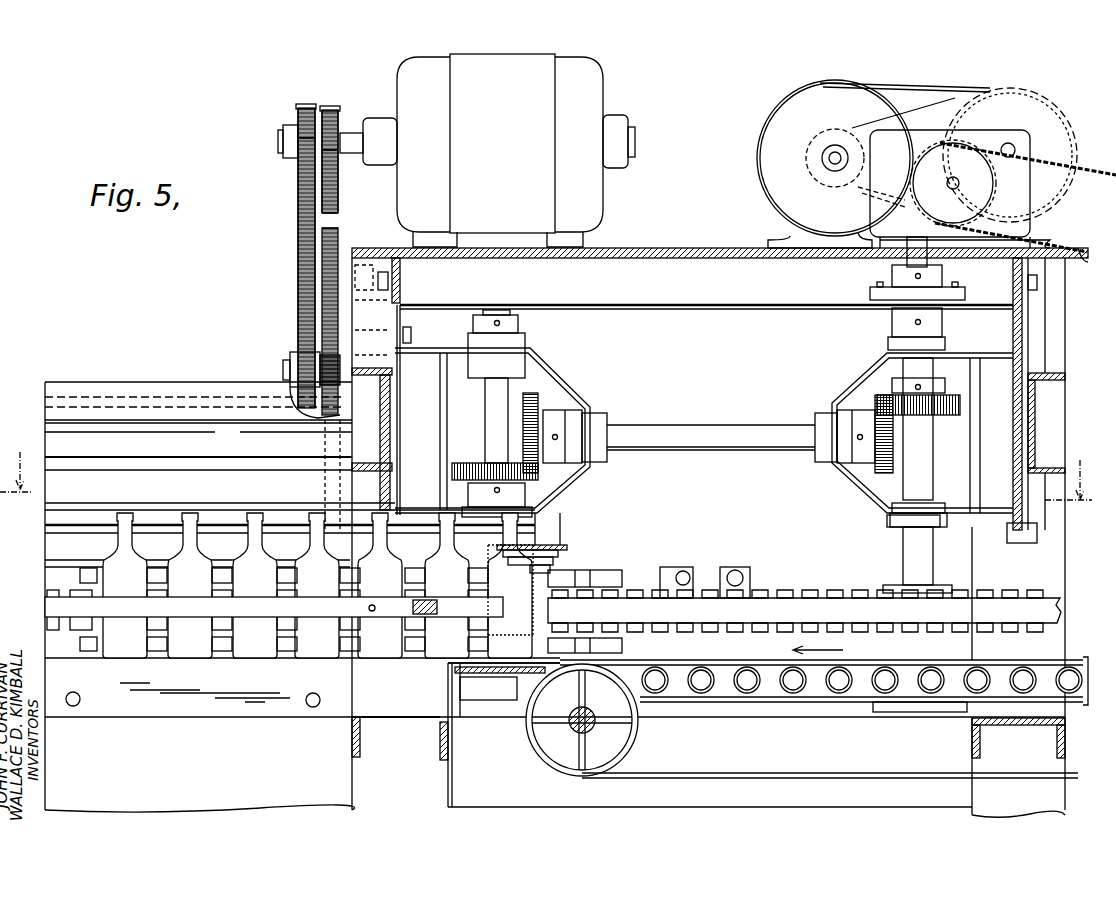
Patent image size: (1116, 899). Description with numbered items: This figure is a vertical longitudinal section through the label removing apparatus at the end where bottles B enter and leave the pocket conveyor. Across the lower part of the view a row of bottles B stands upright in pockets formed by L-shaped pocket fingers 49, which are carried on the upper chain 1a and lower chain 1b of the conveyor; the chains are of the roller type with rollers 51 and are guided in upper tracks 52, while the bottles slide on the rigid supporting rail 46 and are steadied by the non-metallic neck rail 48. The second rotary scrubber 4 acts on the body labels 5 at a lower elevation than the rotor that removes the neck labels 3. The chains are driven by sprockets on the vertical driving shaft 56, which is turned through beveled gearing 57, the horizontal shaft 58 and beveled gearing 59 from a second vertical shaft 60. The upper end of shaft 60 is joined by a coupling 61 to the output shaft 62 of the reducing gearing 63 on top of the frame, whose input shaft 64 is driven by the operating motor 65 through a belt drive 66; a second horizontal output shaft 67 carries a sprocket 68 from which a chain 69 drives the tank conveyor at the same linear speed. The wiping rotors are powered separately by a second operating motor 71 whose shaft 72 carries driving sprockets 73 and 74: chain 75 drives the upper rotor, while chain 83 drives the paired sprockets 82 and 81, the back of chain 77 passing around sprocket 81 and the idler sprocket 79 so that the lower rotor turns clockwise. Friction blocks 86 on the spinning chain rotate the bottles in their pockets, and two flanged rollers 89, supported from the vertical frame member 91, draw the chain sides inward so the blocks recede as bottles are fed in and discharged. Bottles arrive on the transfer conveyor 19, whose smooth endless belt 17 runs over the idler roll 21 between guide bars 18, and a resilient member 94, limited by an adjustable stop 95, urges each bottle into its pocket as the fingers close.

The upper chain 1a is at (560, 542).
The lower chain 1b is at (545, 667).
The neck labels 3 is at (522, 530).
The second rotary scrubber 4 is at (547, 476).
The body labels 5 is at (331, 608).
The endless belt 17 is at (845, 785).
The guide bars 18 is at (830, 598).
The transfer conveyor 19 is at (872, 698).
The idler roll 21 is at (638, 738).
The supporting rail 46 is at (115, 702).
The neck rail 48 is at (222, 545).
The pocket fingers 49 is at (80, 580).
The rollers 51 is at (565, 553).
The upper tracks 52 is at (82, 545).
The vertical driving shaft 56 is at (485, 427).
The beveled gearing 57 is at (535, 400).
The horizontal shaft 58 is at (708, 425).
The beveled gearing 59 is at (870, 465).
The second vertical shaft 60 is at (910, 485).
The coupling 61 is at (870, 292).
The output shaft 62 is at (907, 240).
The reducing gearing 63 is at (975, 138).
The input shaft 64 is at (1015, 150).
The operating motor 65 is at (790, 103).
The belt drive 66 is at (956, 96).
The horizontal output shaft 67 is at (948, 180).
The sprocket 68 is at (1050, 195).
The chain 69 is at (1093, 267).
The second operating motor 71 is at (585, 85).
The motor shaft 72 is at (283, 141).
The driving sprocket 73 is at (328, 108).
The driving sprocket 74 is at (305, 108).
The chain 75 is at (340, 205).
The chain 77 is at (340, 332).
The idler sprocket 79 is at (338, 232).
The sprocket 81 is at (338, 355).
The second sprocket 82 is at (290, 348).
The chain 83 is at (298, 236).
The friction blocks 86 is at (786, 590).
The flanged rollers 89 is at (745, 567).
The vertical frame member 91 is at (700, 567).
The resilient member 94 is at (455, 605).
The adjustable stop 95 is at (333, 617).
The bottles B is at (178, 555).